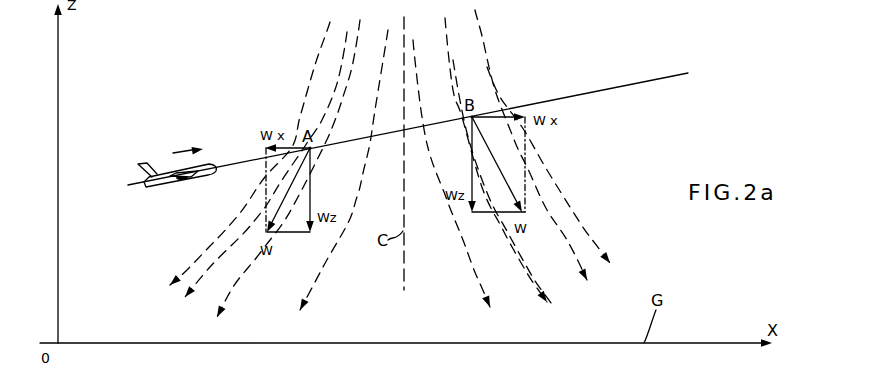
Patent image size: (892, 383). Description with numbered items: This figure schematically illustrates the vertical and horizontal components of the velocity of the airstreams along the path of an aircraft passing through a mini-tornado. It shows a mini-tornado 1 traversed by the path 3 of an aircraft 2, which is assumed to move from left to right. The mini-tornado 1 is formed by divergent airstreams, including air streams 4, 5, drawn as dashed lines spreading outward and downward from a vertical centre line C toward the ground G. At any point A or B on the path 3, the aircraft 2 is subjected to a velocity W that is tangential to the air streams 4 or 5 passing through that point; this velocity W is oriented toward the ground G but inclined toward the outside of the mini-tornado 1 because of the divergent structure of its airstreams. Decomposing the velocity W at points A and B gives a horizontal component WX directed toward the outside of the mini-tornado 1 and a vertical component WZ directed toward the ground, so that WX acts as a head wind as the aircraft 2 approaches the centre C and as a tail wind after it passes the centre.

The mini-tornado 1 is at (390, 159).
The aircraft 2 is at (165, 168).
The path 3 is at (647, 81).
The air stream 4 is at (333, 92).
The air stream 5 is at (455, 74).